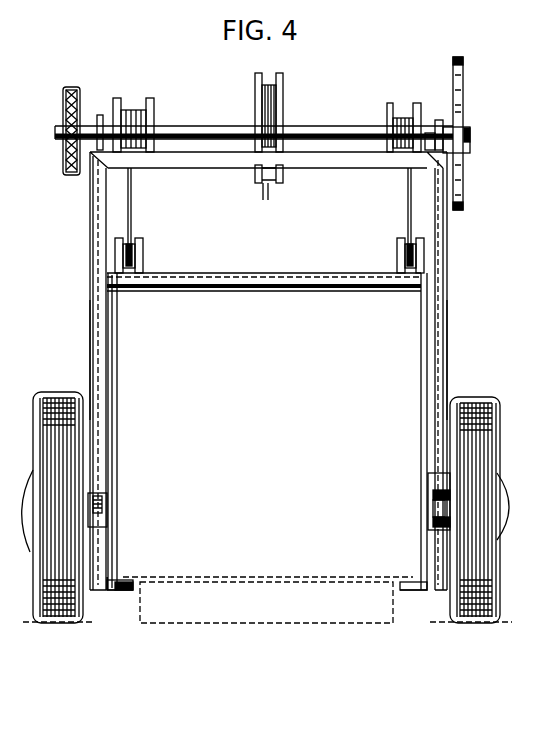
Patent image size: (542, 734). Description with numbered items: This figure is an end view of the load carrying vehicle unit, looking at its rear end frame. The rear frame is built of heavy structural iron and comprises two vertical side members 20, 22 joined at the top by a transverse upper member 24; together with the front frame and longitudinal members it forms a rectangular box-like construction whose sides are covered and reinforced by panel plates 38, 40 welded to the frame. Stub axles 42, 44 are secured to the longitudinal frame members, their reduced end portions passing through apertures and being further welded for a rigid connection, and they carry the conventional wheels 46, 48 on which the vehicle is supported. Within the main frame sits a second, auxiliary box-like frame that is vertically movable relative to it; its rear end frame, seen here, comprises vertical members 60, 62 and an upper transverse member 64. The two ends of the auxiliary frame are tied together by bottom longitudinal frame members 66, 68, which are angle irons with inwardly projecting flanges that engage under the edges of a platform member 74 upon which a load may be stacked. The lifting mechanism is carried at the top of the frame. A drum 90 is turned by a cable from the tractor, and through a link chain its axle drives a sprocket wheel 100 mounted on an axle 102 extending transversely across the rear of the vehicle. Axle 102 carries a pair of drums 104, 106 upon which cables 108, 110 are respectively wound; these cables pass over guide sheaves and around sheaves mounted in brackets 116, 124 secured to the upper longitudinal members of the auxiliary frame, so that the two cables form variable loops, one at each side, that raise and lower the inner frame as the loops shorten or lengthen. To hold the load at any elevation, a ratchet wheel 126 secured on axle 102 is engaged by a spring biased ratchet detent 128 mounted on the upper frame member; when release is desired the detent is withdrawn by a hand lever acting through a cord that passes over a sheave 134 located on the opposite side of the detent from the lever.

The vertical side member 20 is at (103, 257).
The vertical side member 22 is at (435, 257).
The transverse upper member 24 is at (362, 165).
The panel plate 38 is at (447, 324).
The panel plate 40 is at (91, 306).
The stub axle 42 is at (430, 503).
The stub axle 44 is at (90, 520).
The wheel 46 is at (484, 397).
The wheel 48 is at (62, 392).
The vertical member 60 is at (118, 352).
The vertical member 62 is at (421, 350).
The upper transverse member 64 is at (304, 292).
The bottom longitudinal frame member 66 is at (123, 592).
The bottom longitudinal frame member 68 is at (408, 592).
The platform member 74 is at (271, 597).
The drum 90 is at (283, 88).
The sprocket wheel 100 is at (63, 105).
The axle 102 is at (218, 128).
The drum 104 is at (153, 102).
The drum 106 is at (388, 104).
The cable 108 is at (131, 188).
The cable 110 is at (408, 220).
The bracket 116 is at (142, 248).
The bracket 124 is at (397, 252).
The ratchet wheel 126 is at (463, 83).
The ratchet detent 128 is at (463, 148).
The sheave 134 is at (437, 122).